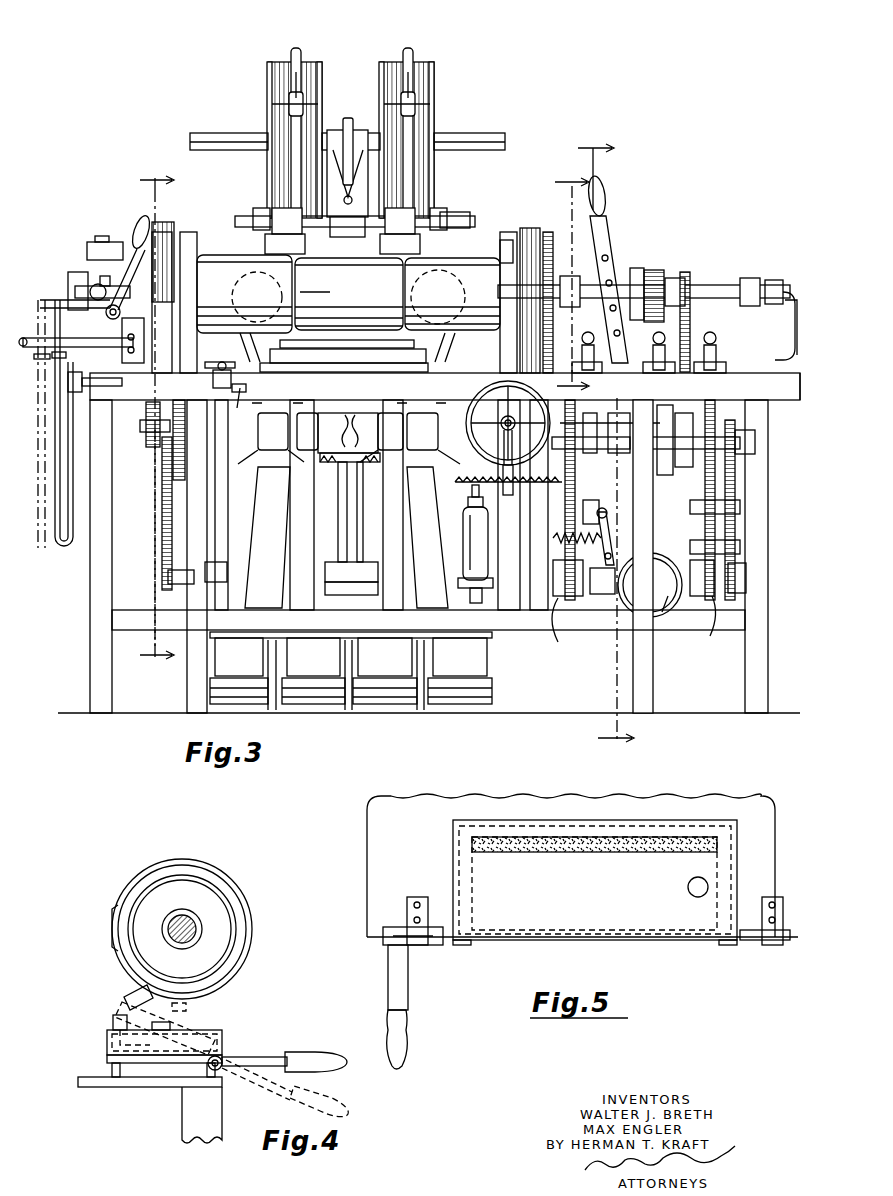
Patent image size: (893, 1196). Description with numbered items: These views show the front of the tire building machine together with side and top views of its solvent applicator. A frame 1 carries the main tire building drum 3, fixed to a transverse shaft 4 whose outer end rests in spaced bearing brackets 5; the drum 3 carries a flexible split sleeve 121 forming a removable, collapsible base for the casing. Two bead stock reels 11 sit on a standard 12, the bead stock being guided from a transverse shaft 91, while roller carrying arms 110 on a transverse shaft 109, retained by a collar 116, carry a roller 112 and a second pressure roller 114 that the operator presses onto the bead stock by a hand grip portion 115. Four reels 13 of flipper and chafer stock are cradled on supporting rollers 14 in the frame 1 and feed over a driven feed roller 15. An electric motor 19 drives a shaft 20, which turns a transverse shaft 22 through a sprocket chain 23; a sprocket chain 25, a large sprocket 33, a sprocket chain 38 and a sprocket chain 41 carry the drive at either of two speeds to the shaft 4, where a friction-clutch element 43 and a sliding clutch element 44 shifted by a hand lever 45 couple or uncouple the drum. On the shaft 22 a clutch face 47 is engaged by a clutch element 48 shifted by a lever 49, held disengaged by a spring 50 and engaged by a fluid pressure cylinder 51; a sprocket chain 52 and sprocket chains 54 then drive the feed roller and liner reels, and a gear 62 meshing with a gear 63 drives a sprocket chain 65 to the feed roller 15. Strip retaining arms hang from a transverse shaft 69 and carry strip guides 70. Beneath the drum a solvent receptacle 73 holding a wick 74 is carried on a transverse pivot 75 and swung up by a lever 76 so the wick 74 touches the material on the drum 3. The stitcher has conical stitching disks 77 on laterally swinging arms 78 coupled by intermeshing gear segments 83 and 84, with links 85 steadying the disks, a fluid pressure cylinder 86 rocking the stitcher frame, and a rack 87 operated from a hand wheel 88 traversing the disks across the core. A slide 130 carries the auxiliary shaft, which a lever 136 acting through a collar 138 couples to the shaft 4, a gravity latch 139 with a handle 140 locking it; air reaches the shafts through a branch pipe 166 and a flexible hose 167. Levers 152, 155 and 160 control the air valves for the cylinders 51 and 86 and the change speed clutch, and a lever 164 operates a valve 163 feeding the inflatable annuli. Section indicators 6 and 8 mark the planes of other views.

In FIG. 3, the frame 1 is at (87, 646).
In FIG. 4, the frame 1 is at (78, 1076).
In FIG. 5, the frame 1 is at (364, 943).
In FIG. 3, the main tire building drum 3 is at (312, 290).
In FIG. 4, the main tire building drum 3 is at (230, 905).
In FIG. 4, the transverse shaft 4 is at (172, 928).
In FIG. 3, the bearing brackets 5 is at (758, 346).
In FIG. 3, the section line 6- 6 is at (594, 444).
In FIG. 3, the section line 8- 8 is at (143, 426).
In FIG. 3, the bead stock reels 11 is at (268, 78).
In FIG. 3, the standard 12 is at (359, 286).
In FIG. 3, the reels 13 is at (216, 660).
In FIG. 3, the supporting rollers 14 is at (238, 700).
In FIG. 3, the feed roller 15 is at (286, 570).
In FIG. 3, the electric motor 19 is at (676, 622).
In FIG. 3, the shaft 20 is at (736, 538).
In FIG. 3, the transverse shaft 22 is at (716, 630).
In FIG. 3, the sprocket chain 23 is at (685, 544).
In FIG. 3, the sprocket chain 25 is at (736, 480).
In FIG. 3, the large sprocket 33 is at (572, 284).
In FIG. 3, the sprocket chain 38 is at (718, 418).
In FIG. 3, the sprocket chain 41 is at (690, 280).
In FIG. 3, the friction-clutch element 43 is at (662, 270).
In FIG. 3, the sliding clutch element 44 is at (640, 268).
In FIG. 3, the hand lever 45 is at (604, 184).
In FIG. 3, the clutch face 47 is at (602, 596).
In FIG. 3, the clutch element 48 is at (632, 596).
In FIG. 3, the lever 49 is at (608, 522).
In FIG. 3, the spring 50 is at (553, 544).
In FIG. 3, the fluid pressure cylinder 51 is at (575, 506).
In FIG. 3, the sprocket chain 52 is at (566, 642).
In FIG. 3, the sprocket chains 54 is at (156, 430).
In FIG. 3, the gear 62 is at (162, 450).
In FIG. 3, the gear 63 is at (164, 498).
In FIG. 3, the sprocket chain 65 is at (154, 530).
In FIG. 3, the transverse shaft 69 is at (213, 380).
In FIG. 3, the strip guide 70 is at (276, 448).
In FIG. 4, the solvent receptacle 73 is at (212, 1012).
In FIG. 5, the solvent receptacle 73 is at (604, 918).
In FIG. 3, the wick 74 is at (355, 302).
In FIG. 4, the wick 74 is at (117, 1005).
In FIG. 5, the wick 74 is at (552, 854).
In FIG. 4, the transverse pivot 75 is at (220, 1070).
In FIG. 5, the transverse pivot 75 is at (753, 948).
In FIG. 3, the lever 76 is at (238, 400).
In FIG. 4, the lever 76 is at (302, 1054).
In FIG. 5, the lever 76 is at (402, 993).
In FIG. 3, the stitching disks 77 is at (272, 282).
In FIG. 3, the laterally swinging arms 78 is at (246, 290).
In FIG. 3, the gear segment 83 is at (323, 478).
In FIG. 3, the gear segment 84 is at (380, 476).
In FIG. 3, the link 85 is at (250, 338).
In FIG. 3, the fluid pressure cylinder 86 is at (463, 552).
In FIG. 3, the rack 87 is at (467, 504).
In FIG. 3, the hand wheel 88 is at (519, 476).
In FIG. 3, the transverse shaft 91 is at (252, 224).
In FIG. 3, the transverse shaft 109 is at (438, 216).
In FIG. 3, the roller carrying arms 110 is at (285, 130).
In FIG. 3, the roller 112 is at (288, 104).
In FIG. 3, the second pressure roller 114 is at (298, 78).
In FIG. 3, the hand grip portion 115 is at (298, 46).
In FIG. 3, the collar 116 is at (260, 208).
In FIG. 4, the flexible split sleeve 121 is at (206, 874).
In FIG. 3, the slide 130 is at (143, 366).
In FIG. 3, the lever 136 is at (140, 222).
In FIG. 3, the collar 138 is at (52, 300).
In FIG. 3, the gravity latch 139 is at (80, 274).
In FIG. 3, the handle 140 is at (112, 238).
In FIG. 3, the lever 152 is at (712, 334).
In FIG. 3, the lever 155 is at (672, 372).
In FIG. 3, the lever 160 is at (592, 332).
In FIG. 3, the valve 163 is at (346, 132).
In FIG. 3, the lever 164 is at (370, 126).
In FIG. 3, the branch pipe 166 is at (768, 378).
In FIG. 3, the flexible hose 167 is at (56, 546).